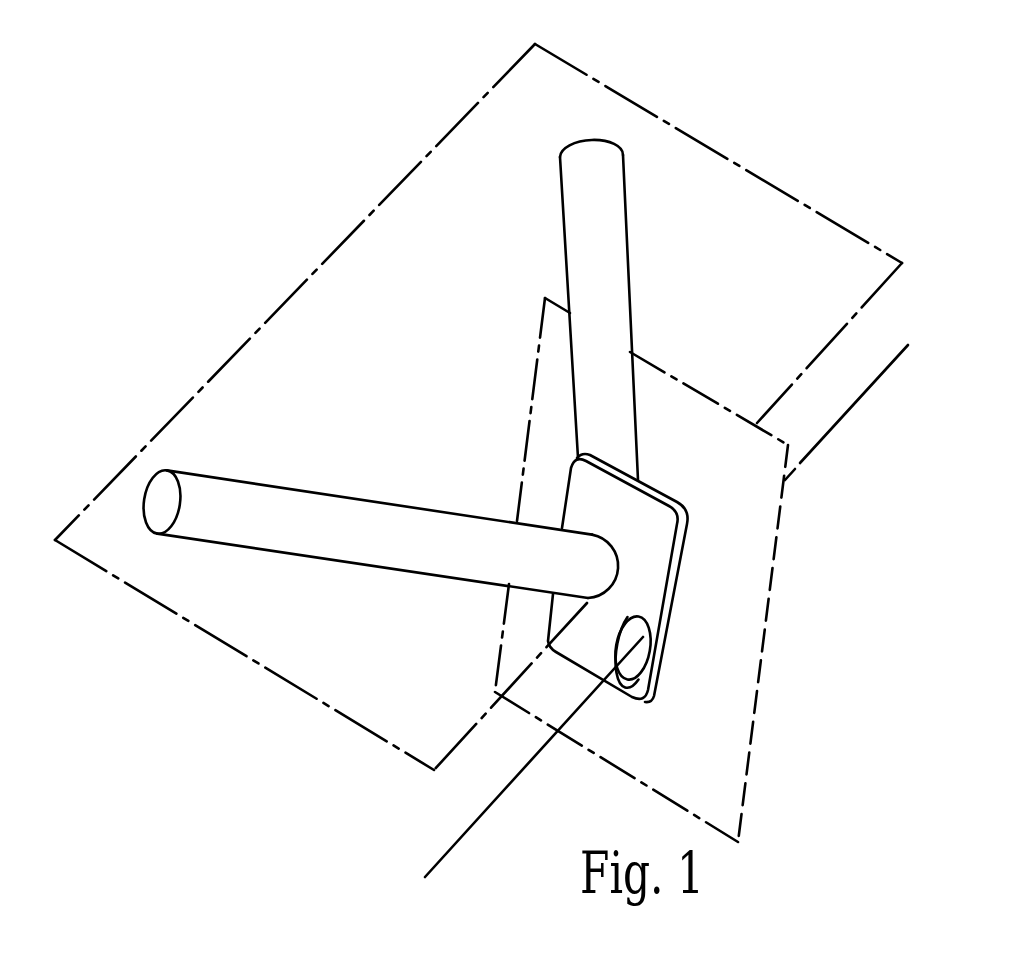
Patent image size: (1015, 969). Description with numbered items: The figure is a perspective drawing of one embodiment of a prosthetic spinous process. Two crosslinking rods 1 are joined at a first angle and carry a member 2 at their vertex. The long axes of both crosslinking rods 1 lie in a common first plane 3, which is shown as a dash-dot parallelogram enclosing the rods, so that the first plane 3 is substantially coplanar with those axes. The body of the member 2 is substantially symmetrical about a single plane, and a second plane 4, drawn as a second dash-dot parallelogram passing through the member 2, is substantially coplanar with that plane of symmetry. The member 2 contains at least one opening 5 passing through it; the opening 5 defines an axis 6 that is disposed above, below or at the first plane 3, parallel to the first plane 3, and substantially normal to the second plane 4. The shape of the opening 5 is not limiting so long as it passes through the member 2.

The crosslinking rods 1 is at (568, 262).
The member 2 is at (657, 534).
The first plane 3 is at (787, 190).
The second plane 4 is at (771, 607).
The opening 5 is at (650, 658).
The axis 6 is at (850, 413).